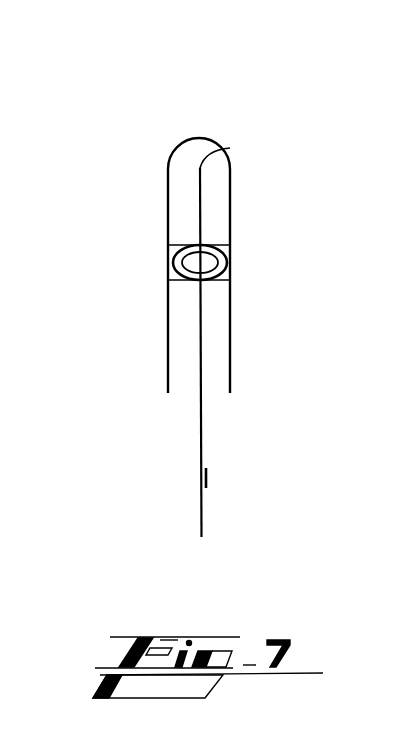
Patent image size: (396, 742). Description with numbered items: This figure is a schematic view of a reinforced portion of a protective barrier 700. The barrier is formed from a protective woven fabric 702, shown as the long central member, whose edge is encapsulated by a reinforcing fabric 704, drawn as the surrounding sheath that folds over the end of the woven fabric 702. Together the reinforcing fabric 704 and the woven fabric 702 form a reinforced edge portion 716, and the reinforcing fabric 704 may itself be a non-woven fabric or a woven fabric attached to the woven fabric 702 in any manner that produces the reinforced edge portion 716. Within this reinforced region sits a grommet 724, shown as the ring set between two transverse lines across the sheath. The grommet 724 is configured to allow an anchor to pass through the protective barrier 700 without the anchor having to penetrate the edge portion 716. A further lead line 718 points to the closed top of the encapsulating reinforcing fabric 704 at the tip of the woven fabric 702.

The protective barrier 700 is at (240, 416).
The protective woven fabric 702 is at (200, 463).
The reinforcing fabric 704 is at (230, 188).
The reinforced edge portion 716 is at (230, 233).
The tip 718 is at (230, 148).
The grommet 724 is at (190, 280).